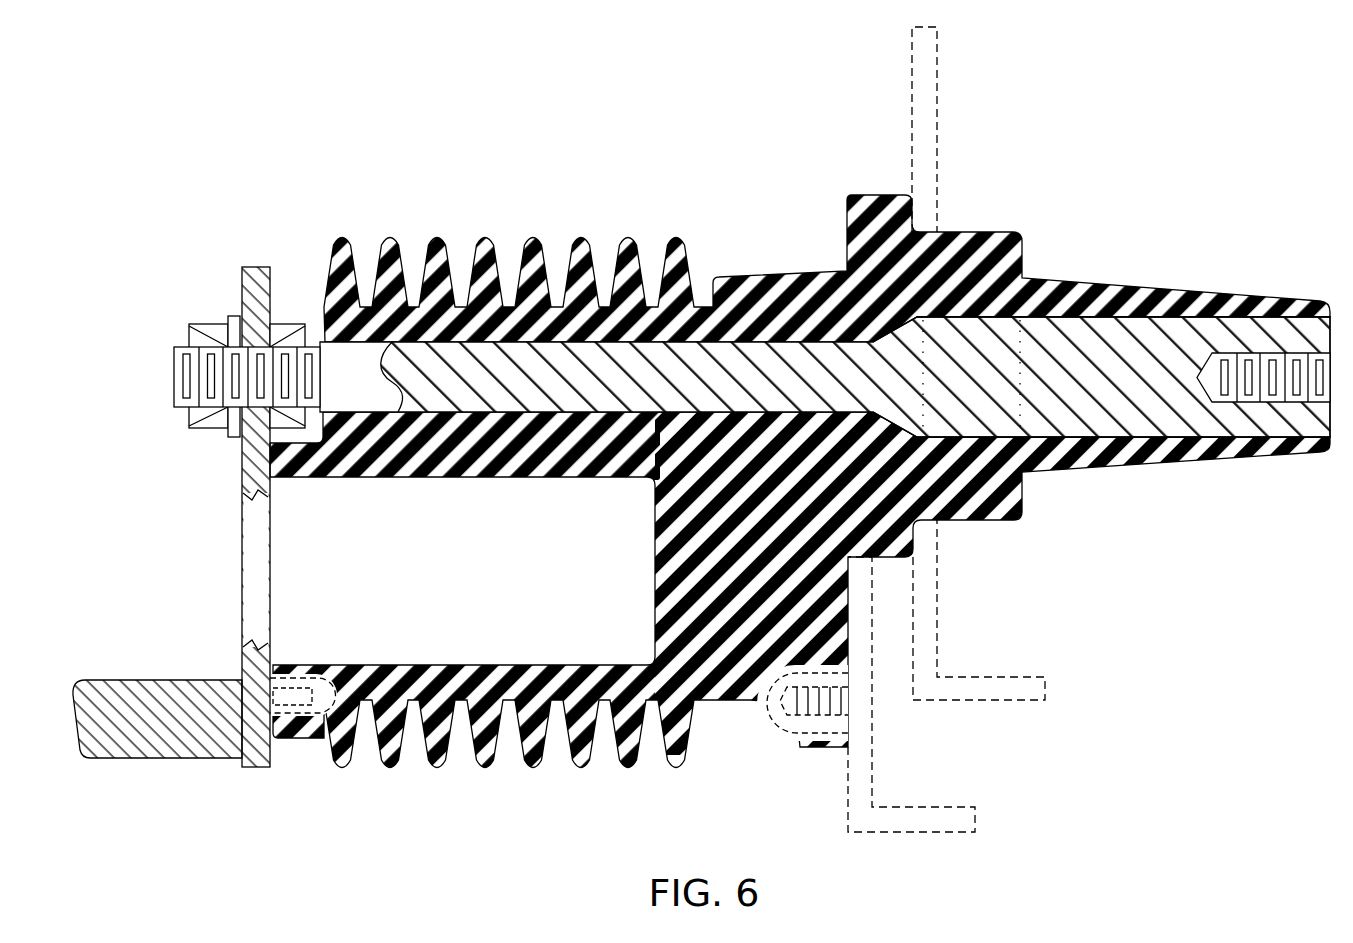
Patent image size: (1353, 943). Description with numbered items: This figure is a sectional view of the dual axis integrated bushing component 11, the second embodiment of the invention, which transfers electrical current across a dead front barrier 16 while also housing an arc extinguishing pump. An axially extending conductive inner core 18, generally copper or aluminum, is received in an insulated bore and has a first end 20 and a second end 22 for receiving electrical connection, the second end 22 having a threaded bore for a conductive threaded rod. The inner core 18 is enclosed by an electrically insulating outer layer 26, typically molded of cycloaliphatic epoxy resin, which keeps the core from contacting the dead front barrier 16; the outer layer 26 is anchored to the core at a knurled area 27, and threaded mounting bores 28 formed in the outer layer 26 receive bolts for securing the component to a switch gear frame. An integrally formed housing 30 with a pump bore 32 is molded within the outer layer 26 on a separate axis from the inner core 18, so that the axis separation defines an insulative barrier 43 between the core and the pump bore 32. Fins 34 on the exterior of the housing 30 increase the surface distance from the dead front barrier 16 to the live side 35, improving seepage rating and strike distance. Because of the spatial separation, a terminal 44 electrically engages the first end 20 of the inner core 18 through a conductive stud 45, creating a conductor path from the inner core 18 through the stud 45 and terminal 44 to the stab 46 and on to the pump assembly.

The dual axis integrated bushing component 11 is at (802, 443).
The dead front barrier 16 is at (925, 70).
The conductive inner core 18 is at (1098, 392).
The first end 20 is at (358, 383).
The second end 22 is at (1272, 418).
The electrically insulating outer layer 26 is at (776, 306).
The knurled area 27 is at (977, 275).
The threaded mounting bores 28 is at (802, 718).
The integrally formed housing 30 is at (410, 603).
The pump bore 32 is at (520, 665).
The fins 34 is at (437, 238).
The live side 35 is at (312, 198).
The insulative barrier 43 is at (603, 425).
The terminal 44 is at (258, 273).
The conductive stud 45 is at (184, 378).
The stab 46 is at (131, 692).